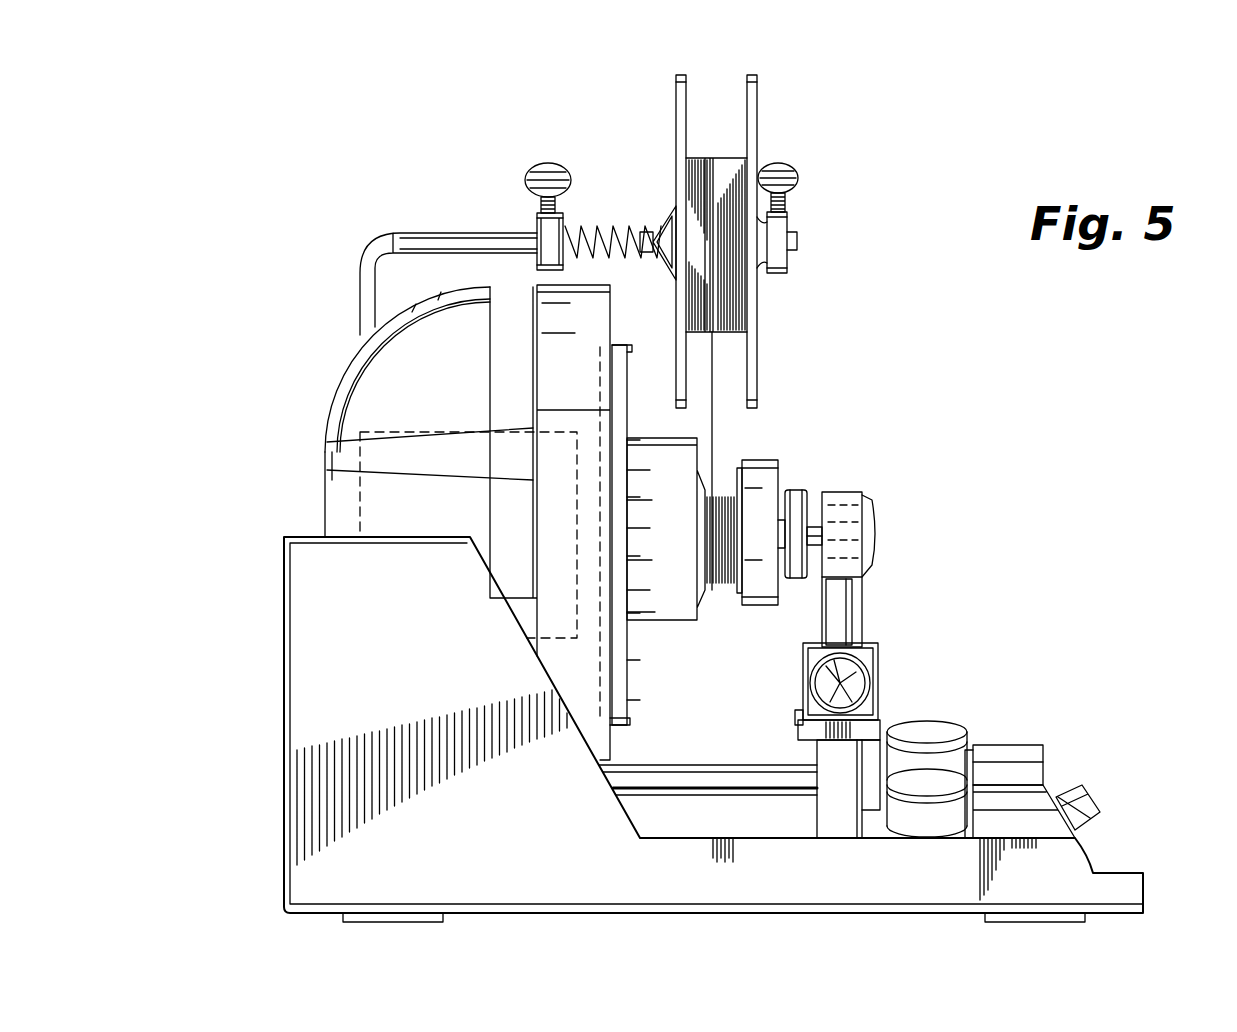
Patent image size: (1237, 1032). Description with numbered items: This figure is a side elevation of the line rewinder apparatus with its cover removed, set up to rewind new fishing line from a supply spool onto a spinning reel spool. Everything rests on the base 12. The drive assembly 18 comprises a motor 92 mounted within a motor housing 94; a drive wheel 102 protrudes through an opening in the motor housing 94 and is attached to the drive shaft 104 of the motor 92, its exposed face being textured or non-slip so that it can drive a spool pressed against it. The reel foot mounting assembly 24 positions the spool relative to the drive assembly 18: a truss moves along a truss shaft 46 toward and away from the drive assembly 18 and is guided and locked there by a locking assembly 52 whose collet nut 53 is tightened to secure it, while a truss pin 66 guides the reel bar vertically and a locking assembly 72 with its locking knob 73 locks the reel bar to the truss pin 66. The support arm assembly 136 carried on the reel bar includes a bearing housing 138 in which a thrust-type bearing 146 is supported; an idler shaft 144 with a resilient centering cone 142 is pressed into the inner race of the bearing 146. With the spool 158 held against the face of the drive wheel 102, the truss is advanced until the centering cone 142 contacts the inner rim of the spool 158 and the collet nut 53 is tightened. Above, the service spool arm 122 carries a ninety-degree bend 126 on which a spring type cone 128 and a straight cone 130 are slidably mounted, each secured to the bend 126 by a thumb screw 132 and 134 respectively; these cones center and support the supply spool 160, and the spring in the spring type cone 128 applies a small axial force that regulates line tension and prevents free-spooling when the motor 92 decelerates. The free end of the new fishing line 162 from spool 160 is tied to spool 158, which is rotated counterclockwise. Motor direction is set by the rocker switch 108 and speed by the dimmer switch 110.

The base 12 is at (1130, 885).
The drive assembly 18 is at (303, 418).
The reel foot mounting assembly 24 is at (957, 634).
The truss shaft 46 is at (640, 790).
The locking assembly 52 is at (906, 842).
The collet nut 53 is at (936, 790).
The truss pin 66 is at (850, 604).
The locking assembly 72 is at (876, 685).
The locking knob 73 is at (808, 686).
The motor 92 is at (330, 510).
The motor housing 94 is at (368, 392).
The drive wheel 102 is at (624, 676).
The drive shaft 104 is at (580, 527).
The switch 108 is at (1095, 826).
The switch 110 is at (1080, 788).
The service spool arm 122 is at (358, 286).
The 90° bend 126 is at (438, 232).
The spring type cone 128 is at (610, 224).
The straight cone 130 is at (788, 254).
The thumb screw 132 is at (548, 163).
The thumb screw 134 is at (796, 173).
The support arm assembly 136 is at (892, 561).
The bearing housing 138 is at (872, 500).
The centering cone 142 is at (806, 490).
The idler shaft 144 is at (812, 527).
The bearing 146 is at (852, 513).
The spool 158 is at (660, 600).
The spool 160 is at (758, 96).
The new fishing line 162 is at (718, 432).